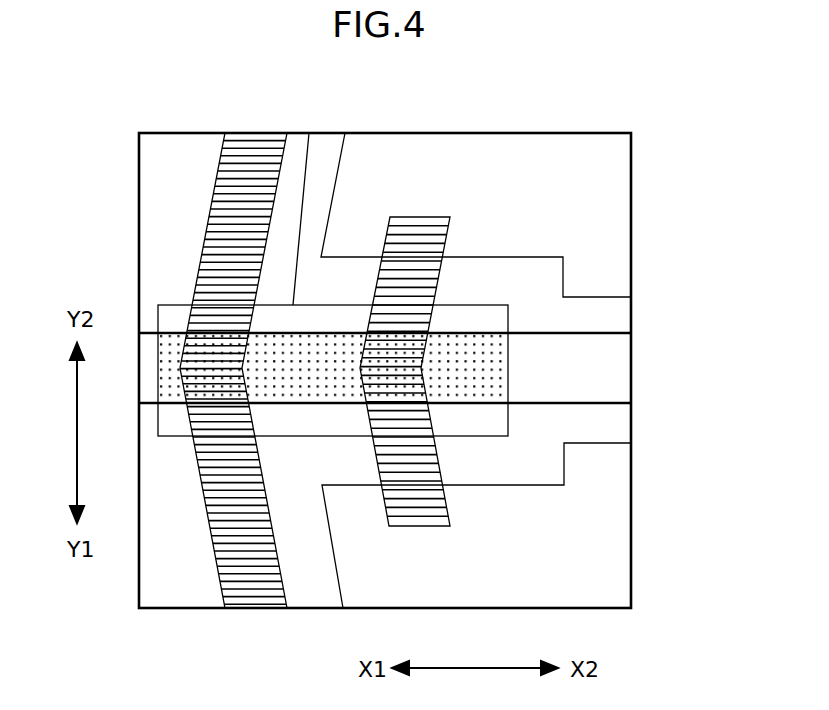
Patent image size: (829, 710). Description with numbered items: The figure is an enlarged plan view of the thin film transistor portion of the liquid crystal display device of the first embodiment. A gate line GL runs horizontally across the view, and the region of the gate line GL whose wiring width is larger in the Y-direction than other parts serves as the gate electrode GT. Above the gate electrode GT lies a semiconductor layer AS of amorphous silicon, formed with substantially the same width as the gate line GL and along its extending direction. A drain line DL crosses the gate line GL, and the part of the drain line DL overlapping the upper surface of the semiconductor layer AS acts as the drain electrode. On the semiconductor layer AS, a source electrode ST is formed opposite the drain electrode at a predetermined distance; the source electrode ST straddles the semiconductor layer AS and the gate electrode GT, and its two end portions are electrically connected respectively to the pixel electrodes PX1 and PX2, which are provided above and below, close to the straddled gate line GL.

The gate line GL is at (607, 371).
The drain line DL is at (213, 203).
The source electrode ST is at (419, 230).
The gate electrode GT is at (309, 133).
The semiconductor layer AS is at (290, 378).
The pixel electrode PX1 is at (615, 213).
The pixel electrode PX2 is at (615, 533).